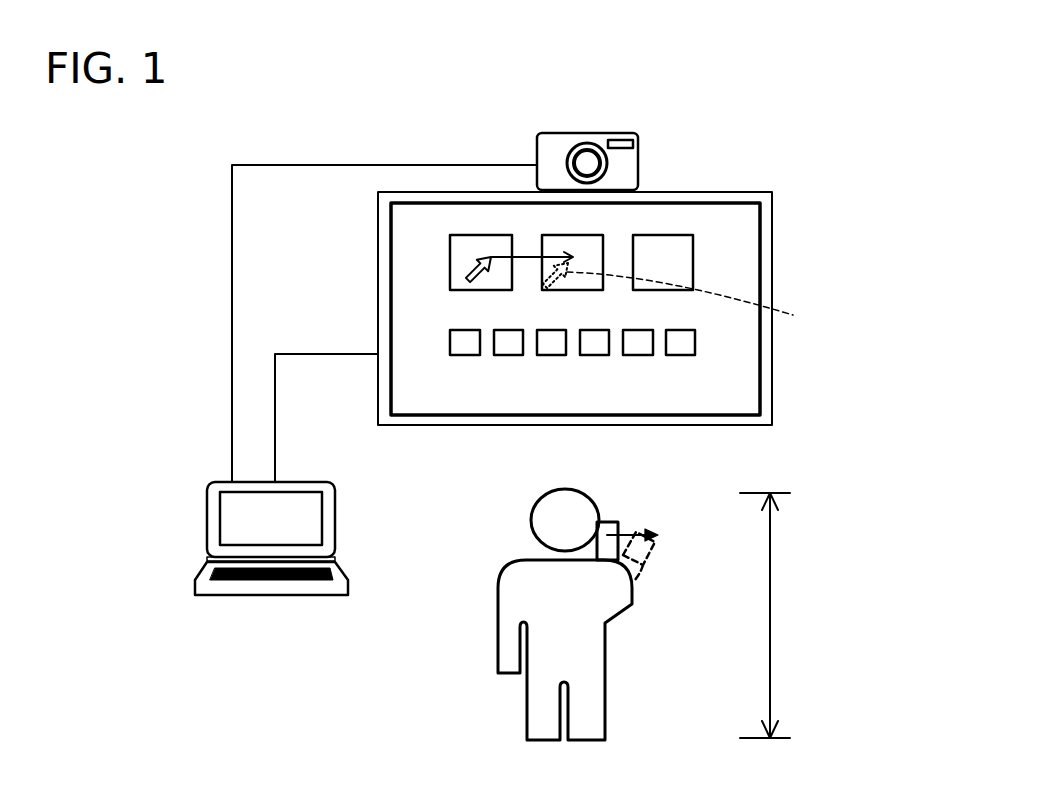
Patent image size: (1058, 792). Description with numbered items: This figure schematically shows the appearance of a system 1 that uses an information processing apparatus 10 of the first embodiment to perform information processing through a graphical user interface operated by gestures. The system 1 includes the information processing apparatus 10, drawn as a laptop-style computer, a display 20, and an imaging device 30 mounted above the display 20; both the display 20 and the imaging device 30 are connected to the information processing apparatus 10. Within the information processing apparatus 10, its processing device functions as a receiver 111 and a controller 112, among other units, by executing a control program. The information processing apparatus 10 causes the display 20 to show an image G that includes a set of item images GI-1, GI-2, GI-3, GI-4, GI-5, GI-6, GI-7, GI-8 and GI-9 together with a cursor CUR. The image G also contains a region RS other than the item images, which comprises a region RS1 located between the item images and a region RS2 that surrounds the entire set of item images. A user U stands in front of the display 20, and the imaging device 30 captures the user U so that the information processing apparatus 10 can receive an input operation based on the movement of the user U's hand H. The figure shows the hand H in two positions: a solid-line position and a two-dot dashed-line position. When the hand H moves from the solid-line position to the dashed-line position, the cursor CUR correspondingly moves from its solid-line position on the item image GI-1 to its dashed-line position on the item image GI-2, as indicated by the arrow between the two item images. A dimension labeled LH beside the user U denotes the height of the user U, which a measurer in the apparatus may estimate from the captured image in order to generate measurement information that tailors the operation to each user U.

The system 1 is at (857, 205).
The information processing apparatus 10 is at (239, 538).
The display 20 is at (772, 288).
The imaging device 30 is at (638, 157).
The image G is at (760, 247).
The item image GI-1 is at (449, 258).
The item image GI-2 is at (567, 235).
The item image GI-3 is at (663, 235).
The item image GI-4 is at (465, 355).
The item image GI-5 is at (508, 355).
The item image GI-6 is at (550, 355).
The item image GI-7 is at (595, 355).
The item image GI-8 is at (638, 355).
The item image GI-9 is at (680, 355).
The cursor CUR is at (466, 281).
The region RS is at (740, 358).
The region RS1 is at (530, 352).
The circular region RS2 is at (723, 385).
The receiver 111 is at (207, 587).
The controller 112 is at (271, 578).
The user U is at (571, 614).
The hand H is at (625, 527).
The height LH is at (777, 615).